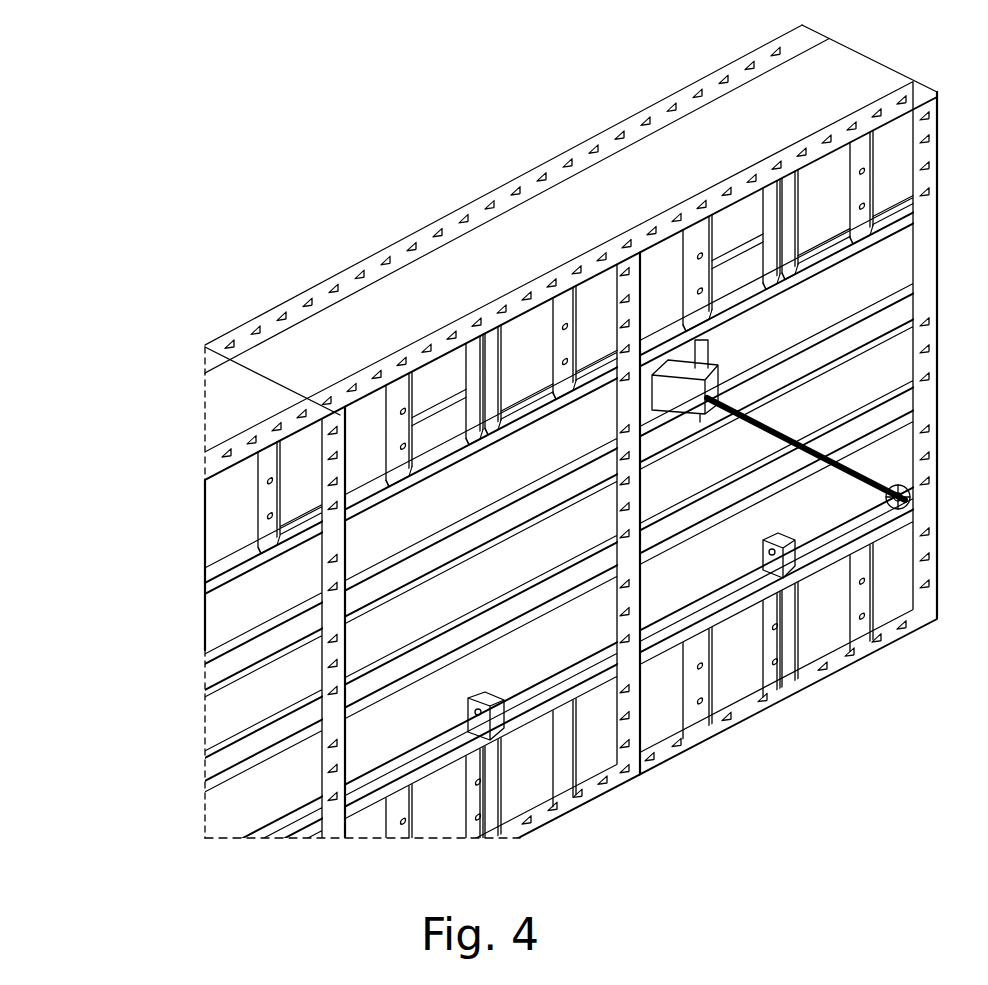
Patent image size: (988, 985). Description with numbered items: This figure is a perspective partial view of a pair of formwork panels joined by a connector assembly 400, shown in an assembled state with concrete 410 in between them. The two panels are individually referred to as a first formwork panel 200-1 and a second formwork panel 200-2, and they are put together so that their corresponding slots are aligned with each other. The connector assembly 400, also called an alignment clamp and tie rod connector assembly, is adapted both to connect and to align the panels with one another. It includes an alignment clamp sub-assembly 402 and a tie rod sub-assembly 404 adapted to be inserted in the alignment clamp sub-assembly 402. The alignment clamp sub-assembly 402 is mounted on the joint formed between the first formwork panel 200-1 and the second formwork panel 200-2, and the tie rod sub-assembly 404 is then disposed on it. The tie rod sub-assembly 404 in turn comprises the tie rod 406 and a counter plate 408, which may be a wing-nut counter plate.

The first formwork panel 200-1 is at (390, 377).
The second formwork panel 200-2 is at (743, 195).
The connector assembly 400 is at (92, 672).
The alignment clamp sub-assembly 402 is at (655, 405).
The tie rod sub-assembly 404 is at (148, 743).
The tie rod 406 is at (862, 478).
The counter plate 408 is at (878, 503).
The concrete 410 is at (432, 290).